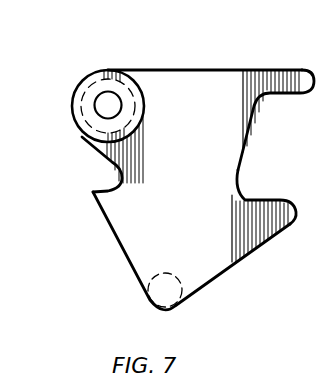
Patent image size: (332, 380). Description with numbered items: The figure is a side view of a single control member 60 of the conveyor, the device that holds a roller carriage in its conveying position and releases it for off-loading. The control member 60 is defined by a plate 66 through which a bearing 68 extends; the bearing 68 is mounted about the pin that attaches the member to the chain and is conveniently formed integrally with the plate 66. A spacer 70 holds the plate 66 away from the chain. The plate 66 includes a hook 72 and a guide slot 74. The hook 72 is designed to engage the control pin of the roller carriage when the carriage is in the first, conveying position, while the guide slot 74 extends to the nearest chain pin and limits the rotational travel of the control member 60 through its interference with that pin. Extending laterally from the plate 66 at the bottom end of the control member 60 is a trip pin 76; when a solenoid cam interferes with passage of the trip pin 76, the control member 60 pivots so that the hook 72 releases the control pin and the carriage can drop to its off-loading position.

The control member 60 is at (188, 70).
The plate 66 is at (255, 70).
The bearing 68 is at (129, 76).
The spacer 70 is at (84, 125).
The hook 72 is at (107, 183).
The guide slot 74 is at (250, 139).
The trip pin 76 is at (183, 290).